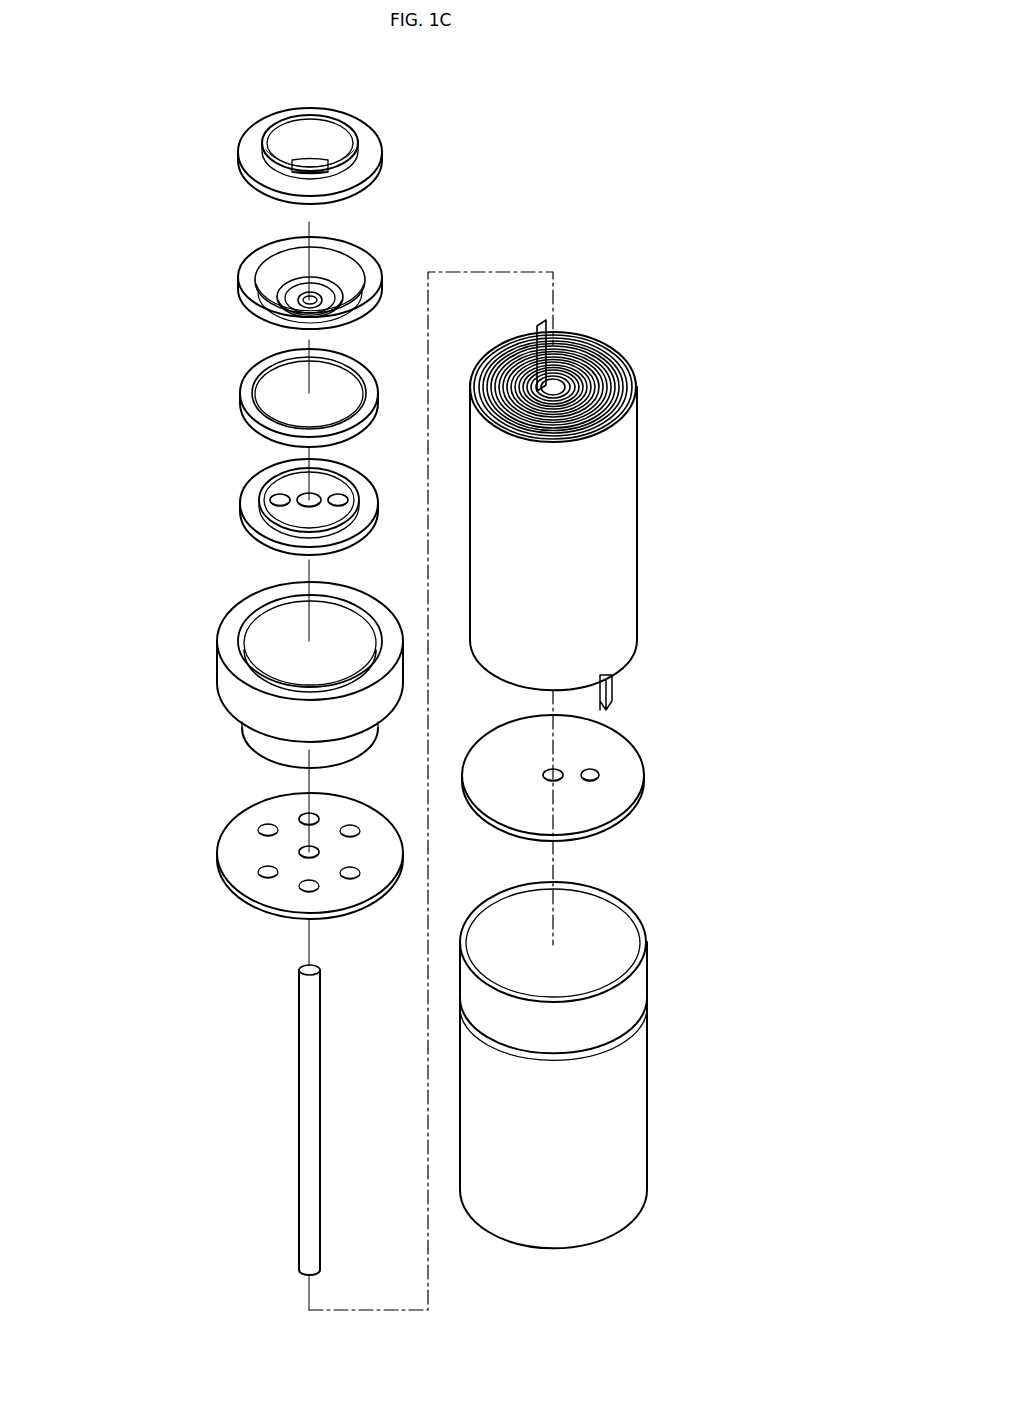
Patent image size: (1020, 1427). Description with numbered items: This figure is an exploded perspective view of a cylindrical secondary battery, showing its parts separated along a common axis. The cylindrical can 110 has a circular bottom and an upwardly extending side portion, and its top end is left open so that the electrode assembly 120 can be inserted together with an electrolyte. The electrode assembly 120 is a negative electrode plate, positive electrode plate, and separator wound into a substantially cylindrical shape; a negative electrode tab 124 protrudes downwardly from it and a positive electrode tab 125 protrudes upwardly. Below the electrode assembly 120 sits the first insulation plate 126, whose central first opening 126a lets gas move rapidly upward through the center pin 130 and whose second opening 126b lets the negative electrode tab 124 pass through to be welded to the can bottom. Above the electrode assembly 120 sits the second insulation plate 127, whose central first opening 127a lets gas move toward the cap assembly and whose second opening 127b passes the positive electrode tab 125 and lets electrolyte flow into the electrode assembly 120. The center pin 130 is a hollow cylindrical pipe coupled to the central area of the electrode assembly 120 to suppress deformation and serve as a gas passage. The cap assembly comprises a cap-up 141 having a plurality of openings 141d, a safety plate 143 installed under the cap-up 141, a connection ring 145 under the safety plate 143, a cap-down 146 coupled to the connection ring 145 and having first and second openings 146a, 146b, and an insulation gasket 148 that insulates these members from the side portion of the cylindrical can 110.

The cylindrical can 110 is at (650, 1103).
The electrode assembly 120 is at (640, 524).
The negative electrode tab 124 is at (612, 688).
The positive electrode tab 125 is at (537, 330).
The first insulation plate 126 is at (603, 808).
The first opening 126a is at (557, 770).
The second opening 126b is at (595, 772).
The second insulation plate 127 is at (243, 880).
The first opening 127a is at (300, 852).
The second opening 127b is at (266, 824).
The center pin 130 is at (303, 1112).
The cap-up 141 is at (280, 133).
The openings 141d is at (298, 170).
The safety plate 143 is at (248, 283).
The connection ring 145 is at (255, 397).
The cap-down 146 is at (262, 523).
The first opening 146a is at (303, 496).
The second opening 146b is at (272, 498).
The insulation gasket 148 is at (218, 676).